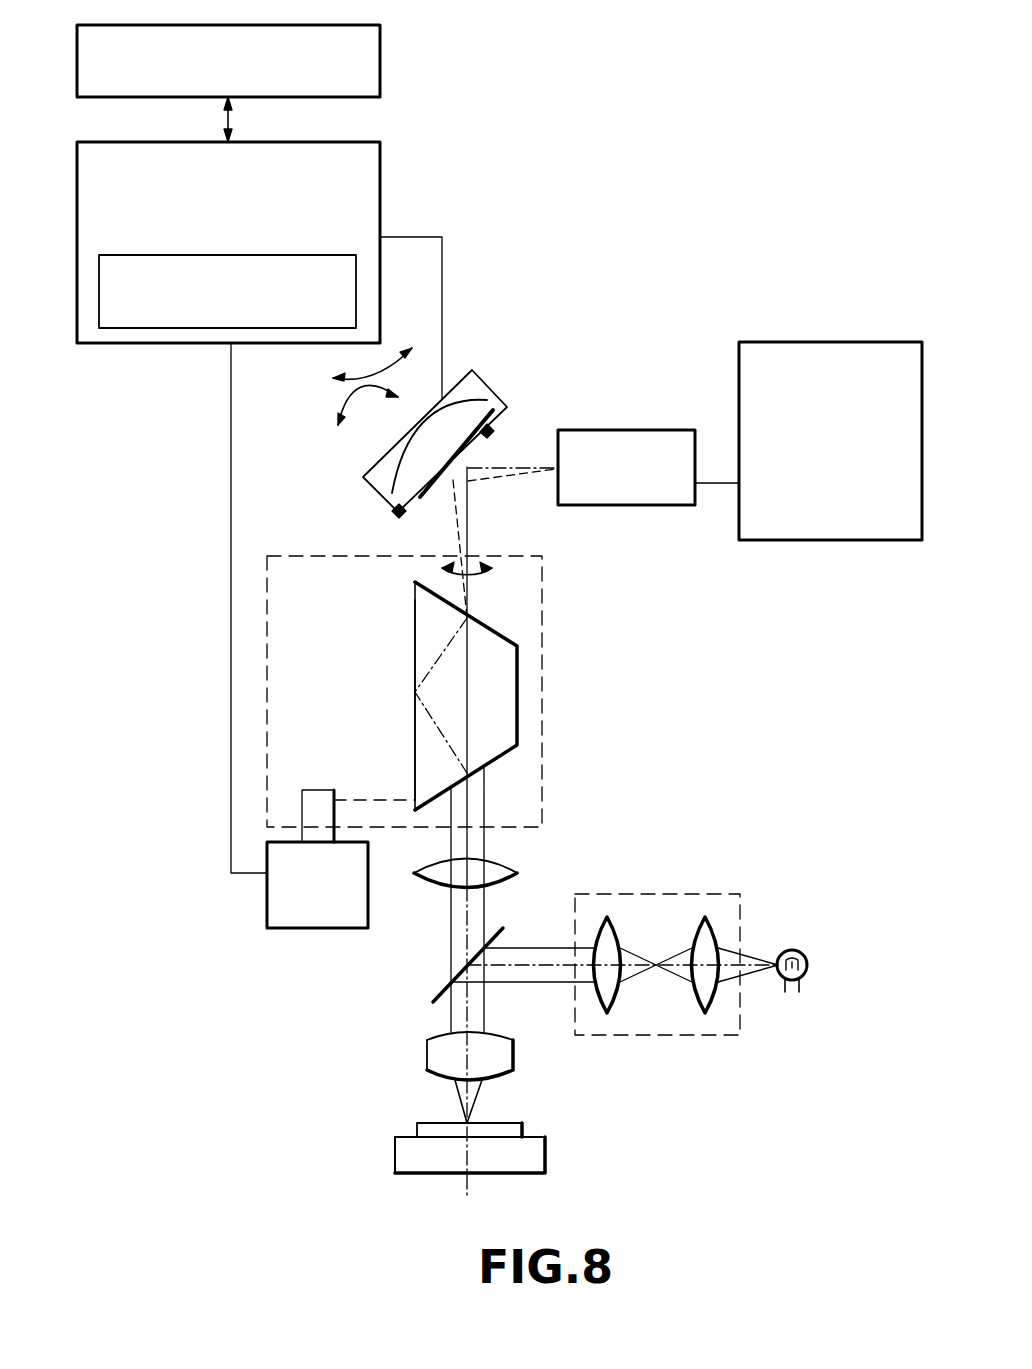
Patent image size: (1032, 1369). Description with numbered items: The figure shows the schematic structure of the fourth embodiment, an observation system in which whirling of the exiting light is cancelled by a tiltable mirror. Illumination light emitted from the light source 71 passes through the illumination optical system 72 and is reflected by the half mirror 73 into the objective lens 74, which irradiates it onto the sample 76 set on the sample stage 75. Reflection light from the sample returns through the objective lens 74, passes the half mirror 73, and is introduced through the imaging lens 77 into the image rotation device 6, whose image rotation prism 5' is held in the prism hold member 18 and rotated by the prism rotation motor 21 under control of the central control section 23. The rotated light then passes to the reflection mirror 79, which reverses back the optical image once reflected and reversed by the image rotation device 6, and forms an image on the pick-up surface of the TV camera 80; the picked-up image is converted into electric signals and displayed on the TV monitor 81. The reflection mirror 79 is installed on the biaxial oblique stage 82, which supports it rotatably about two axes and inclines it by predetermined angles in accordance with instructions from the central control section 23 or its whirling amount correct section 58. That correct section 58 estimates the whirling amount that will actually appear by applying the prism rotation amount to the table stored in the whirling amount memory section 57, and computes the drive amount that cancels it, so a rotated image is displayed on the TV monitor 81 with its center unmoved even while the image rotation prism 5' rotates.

The whirling amount memory section 57 is at (381, 62).
The central control section 23 is at (381, 188).
The whirling amount correct section 58 is at (152, 330).
The biaxial oblique stage 82 is at (473, 388).
The reflection mirror 79 is at (496, 431).
The TV camera 80 is at (617, 428).
The TV monitor 81 is at (812, 340).
The image rotation device 6 is at (543, 609).
The image rotation prism 5' is at (397, 700).
The prism hold member 18 is at (544, 738).
The prism rotation motor 21 is at (266, 918).
The imaging lens 77 is at (512, 872).
The half mirror 73 is at (436, 992).
The illumination optical system 72 is at (673, 1036).
The light source 71 is at (806, 975).
The objective lens 74 is at (427, 1058).
The sample 76 is at (417, 1128).
The sample stage 75 is at (396, 1160).